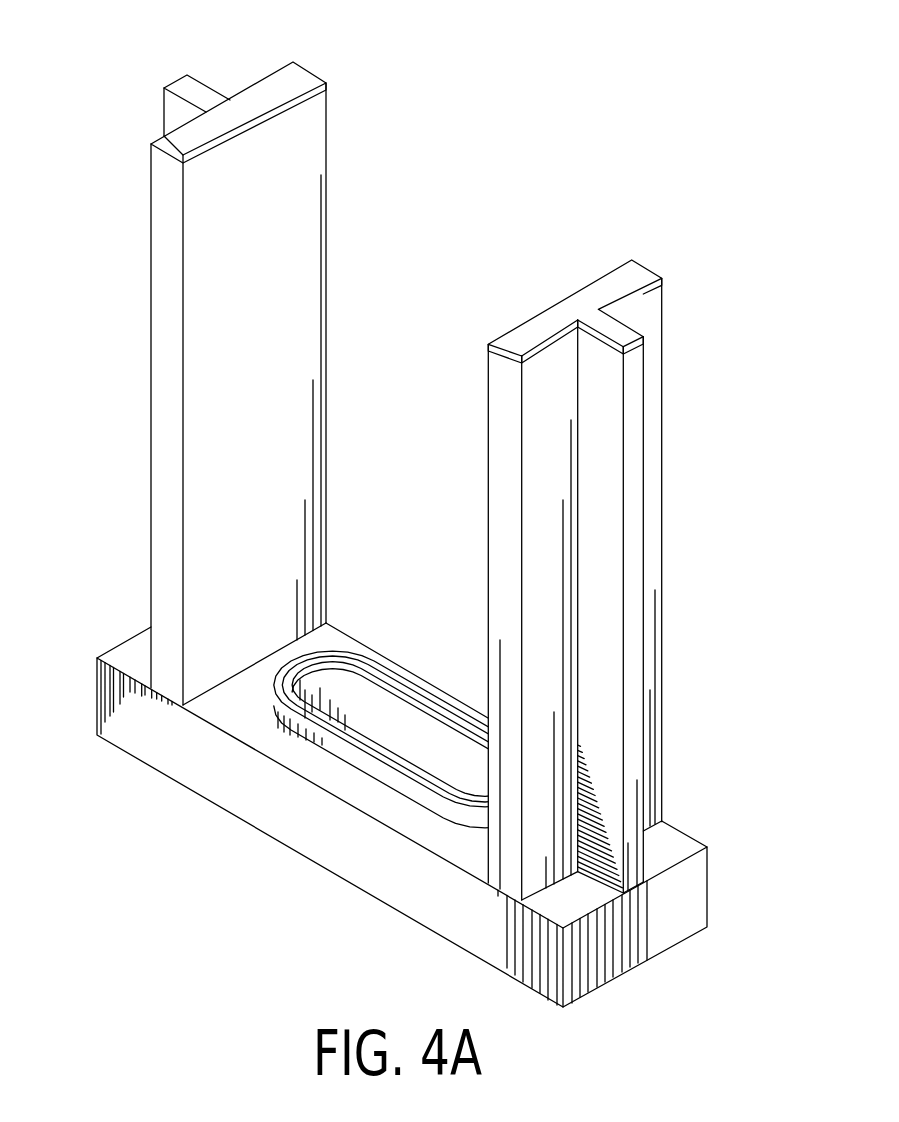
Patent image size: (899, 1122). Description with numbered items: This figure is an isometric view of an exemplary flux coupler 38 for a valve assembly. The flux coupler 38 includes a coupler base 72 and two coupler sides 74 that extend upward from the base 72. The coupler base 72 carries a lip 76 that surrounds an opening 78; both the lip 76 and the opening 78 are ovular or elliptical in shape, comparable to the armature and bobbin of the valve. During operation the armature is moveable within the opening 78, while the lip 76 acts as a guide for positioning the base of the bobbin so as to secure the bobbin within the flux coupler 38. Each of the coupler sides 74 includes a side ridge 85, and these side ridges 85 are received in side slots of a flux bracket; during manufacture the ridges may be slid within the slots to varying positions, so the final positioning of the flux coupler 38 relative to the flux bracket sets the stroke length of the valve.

The flux coupler 38 is at (97, 86).
The coupler base 72 is at (693, 906).
The coupler sides 74 is at (657, 425).
The lip 76 is at (280, 716).
The opening 78 is at (364, 700).
The side ridges 85 is at (638, 376).